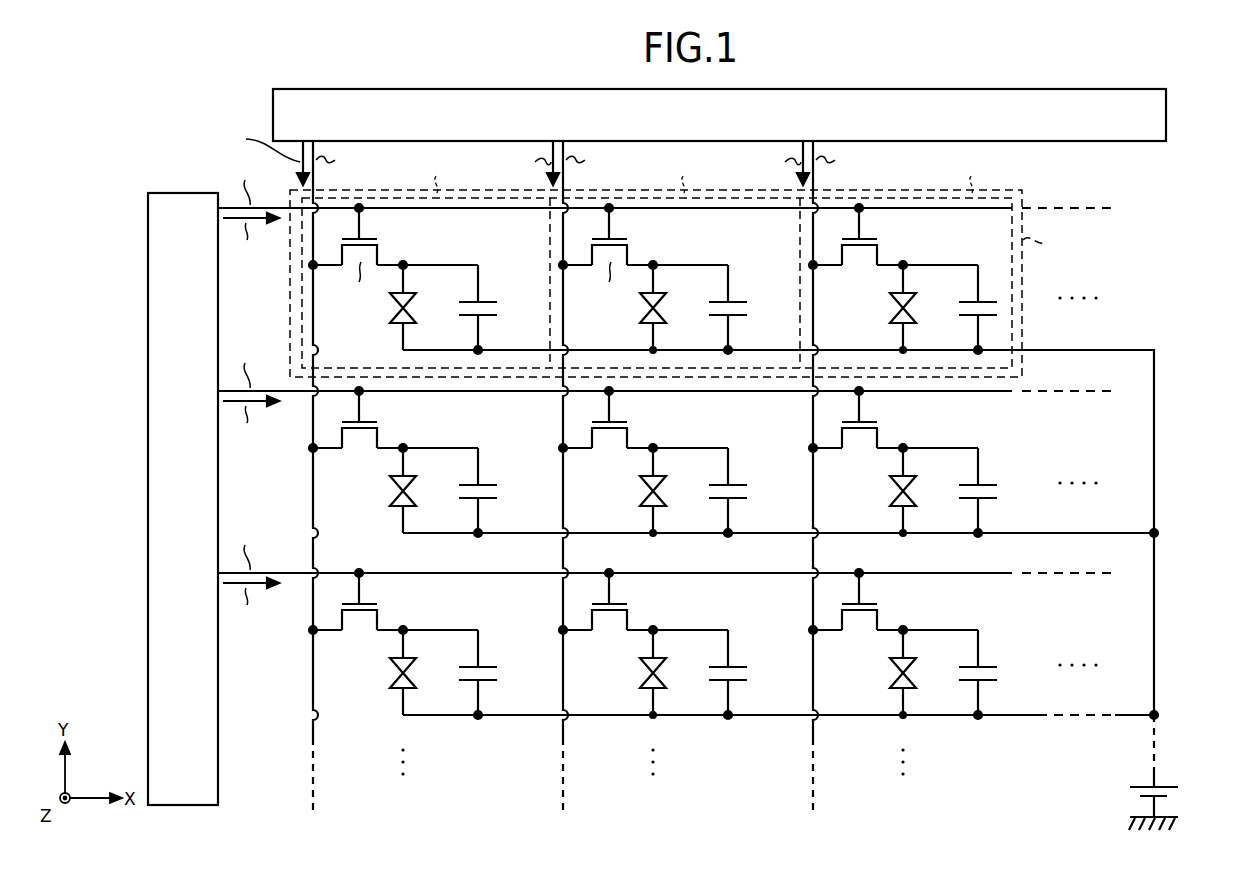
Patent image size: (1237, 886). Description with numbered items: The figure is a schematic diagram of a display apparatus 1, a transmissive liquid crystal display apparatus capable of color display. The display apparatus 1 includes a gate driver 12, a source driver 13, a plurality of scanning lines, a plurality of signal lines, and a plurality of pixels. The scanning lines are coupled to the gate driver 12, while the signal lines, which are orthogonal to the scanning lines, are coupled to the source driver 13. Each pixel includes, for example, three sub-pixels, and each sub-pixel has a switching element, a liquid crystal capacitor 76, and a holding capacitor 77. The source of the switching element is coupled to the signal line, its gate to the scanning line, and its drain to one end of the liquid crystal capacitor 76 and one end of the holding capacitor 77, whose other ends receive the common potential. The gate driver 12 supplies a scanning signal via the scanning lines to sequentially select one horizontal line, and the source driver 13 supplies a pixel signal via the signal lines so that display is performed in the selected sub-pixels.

The display apparatus 1 is at (1112, 64).
The gate driver 12 is at (170, 198).
The source driver 13 is at (1166, 113).
The liquid crystal capacitor 76 is at (416, 310).
The holding capacitor 77 is at (498, 307).